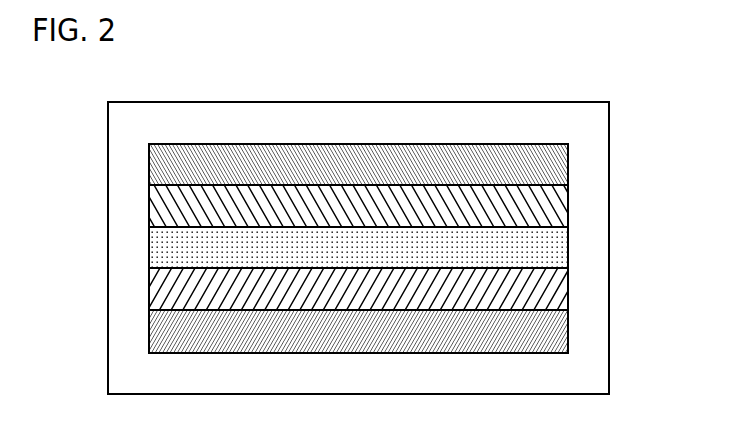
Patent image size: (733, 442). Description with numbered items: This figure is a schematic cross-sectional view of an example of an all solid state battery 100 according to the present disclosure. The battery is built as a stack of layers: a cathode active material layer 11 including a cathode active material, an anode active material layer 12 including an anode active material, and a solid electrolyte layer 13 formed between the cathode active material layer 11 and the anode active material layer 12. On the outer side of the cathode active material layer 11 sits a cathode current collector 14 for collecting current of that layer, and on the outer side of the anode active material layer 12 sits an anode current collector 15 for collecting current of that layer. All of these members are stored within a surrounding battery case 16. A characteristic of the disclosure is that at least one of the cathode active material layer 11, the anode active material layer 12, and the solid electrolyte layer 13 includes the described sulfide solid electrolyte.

The all solid state battery 100 is at (594, 59).
The battery case 16 is at (587, 116).
The cathode current collector 14 is at (557, 155).
The cathode active material layer 11 is at (555, 200).
The solid electrolyte layer 13 is at (555, 240).
The anode active material layer 12 is at (557, 282).
The anode current collector 15 is at (568, 321).